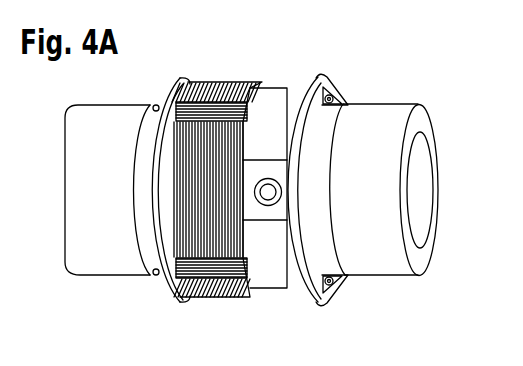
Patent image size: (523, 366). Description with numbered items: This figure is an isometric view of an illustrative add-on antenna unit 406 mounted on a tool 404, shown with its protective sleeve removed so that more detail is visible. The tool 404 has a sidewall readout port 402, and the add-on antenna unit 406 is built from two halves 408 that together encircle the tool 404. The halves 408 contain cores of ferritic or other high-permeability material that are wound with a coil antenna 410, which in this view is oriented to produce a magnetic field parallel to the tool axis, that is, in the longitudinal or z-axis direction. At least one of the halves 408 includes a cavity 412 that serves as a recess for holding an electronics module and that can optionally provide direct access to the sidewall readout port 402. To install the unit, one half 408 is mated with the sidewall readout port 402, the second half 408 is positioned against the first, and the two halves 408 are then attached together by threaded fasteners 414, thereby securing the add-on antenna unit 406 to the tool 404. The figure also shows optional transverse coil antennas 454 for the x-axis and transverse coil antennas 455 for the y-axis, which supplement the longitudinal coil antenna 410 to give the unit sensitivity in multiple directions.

The sidewall readout port 402 is at (267, 206).
The tool 404 is at (103, 106).
The add-on antenna unit 406 is at (177, 80).
The halves 408 is at (286, 85).
The coil antenna 410 is at (235, 83).
The cavity 412 is at (265, 153).
The threaded fasteners 414 is at (334, 98).
The transverse coil antennas 454 is at (232, 114).
The transverse coil antennas 455 is at (232, 268).